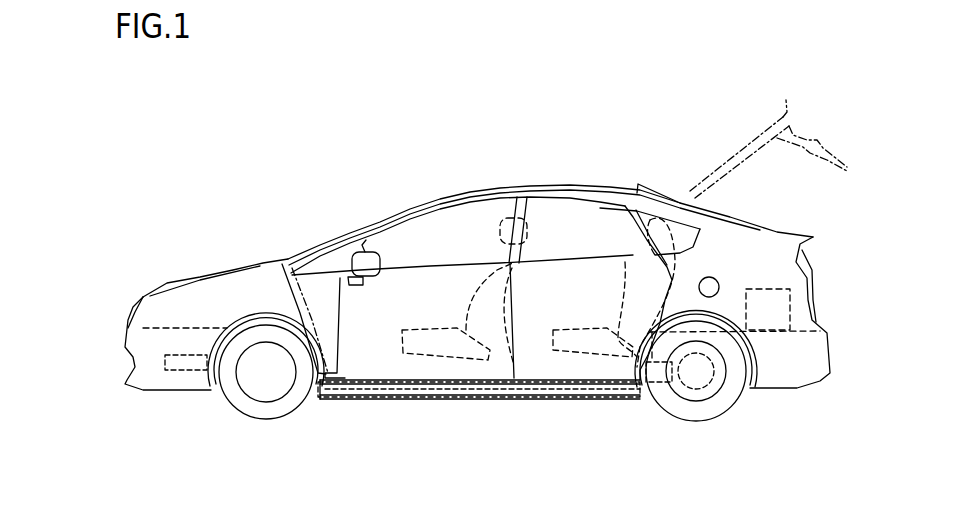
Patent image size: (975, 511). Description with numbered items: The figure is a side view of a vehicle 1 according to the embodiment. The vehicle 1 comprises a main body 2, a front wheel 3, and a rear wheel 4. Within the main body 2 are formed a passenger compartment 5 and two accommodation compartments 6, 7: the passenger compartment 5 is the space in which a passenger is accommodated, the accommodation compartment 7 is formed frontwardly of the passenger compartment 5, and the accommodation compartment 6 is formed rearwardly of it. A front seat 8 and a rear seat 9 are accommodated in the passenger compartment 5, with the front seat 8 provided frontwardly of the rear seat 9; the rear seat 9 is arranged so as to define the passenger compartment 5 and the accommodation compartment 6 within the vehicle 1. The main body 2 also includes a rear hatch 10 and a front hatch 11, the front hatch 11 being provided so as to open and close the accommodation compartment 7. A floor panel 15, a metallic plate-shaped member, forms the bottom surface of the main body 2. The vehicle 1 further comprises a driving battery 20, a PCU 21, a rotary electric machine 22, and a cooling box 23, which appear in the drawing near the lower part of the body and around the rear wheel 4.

The vehicle 1 is at (650, 88).
The main body 2 is at (538, 186).
The front wheel 3 is at (267, 405).
The rear wheel 4 is at (744, 395).
The passenger compartment 5 is at (447, 228).
The accommodation compartment 6 is at (760, 254).
The accommodation compartment 7 is at (238, 290).
The front seat 8 is at (484, 285).
The rear seat 9 is at (633, 293).
The rear hatch 10 is at (786, 113).
The front hatch 11 is at (194, 282).
The floor panel 15 is at (493, 388).
The driving battery 20 is at (432, 388).
The PCU (Power Control Unit) 21 is at (648, 384).
The rotary electric machine 22 is at (700, 392).
The cooling box 23 is at (790, 312).